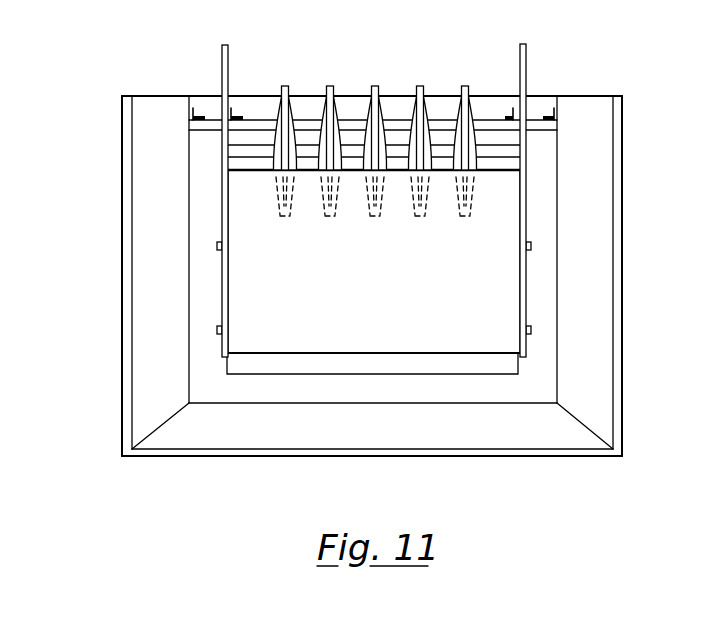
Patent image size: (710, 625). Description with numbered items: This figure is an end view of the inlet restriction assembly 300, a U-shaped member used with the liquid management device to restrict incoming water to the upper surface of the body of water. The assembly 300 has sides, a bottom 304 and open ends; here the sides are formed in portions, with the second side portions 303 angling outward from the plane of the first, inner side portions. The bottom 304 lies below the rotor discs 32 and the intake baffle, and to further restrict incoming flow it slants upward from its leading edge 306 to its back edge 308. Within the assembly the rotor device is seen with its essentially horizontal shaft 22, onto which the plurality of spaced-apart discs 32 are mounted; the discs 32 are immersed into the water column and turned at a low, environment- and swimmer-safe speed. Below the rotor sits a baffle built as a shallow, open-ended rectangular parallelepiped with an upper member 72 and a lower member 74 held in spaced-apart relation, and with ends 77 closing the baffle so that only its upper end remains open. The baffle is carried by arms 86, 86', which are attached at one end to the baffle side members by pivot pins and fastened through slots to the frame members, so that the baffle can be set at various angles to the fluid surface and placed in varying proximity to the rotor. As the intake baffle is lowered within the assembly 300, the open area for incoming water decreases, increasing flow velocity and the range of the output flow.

The inlet restriction assembly 300 is at (95, 125).
The second side portions 303 is at (155, 278).
The bottom 304 is at (340, 435).
The leading edge 306 is at (445, 452).
The back edge 308 is at (413, 402).
The shaft 22 is at (512, 148).
The discs 32 is at (291, 112).
The upper member 72 is at (381, 296).
The lower member 74 is at (263, 377).
The ends 77 is at (300, 365).
The arm 86 is at (245, 193).
The arm 86' is at (550, 198).